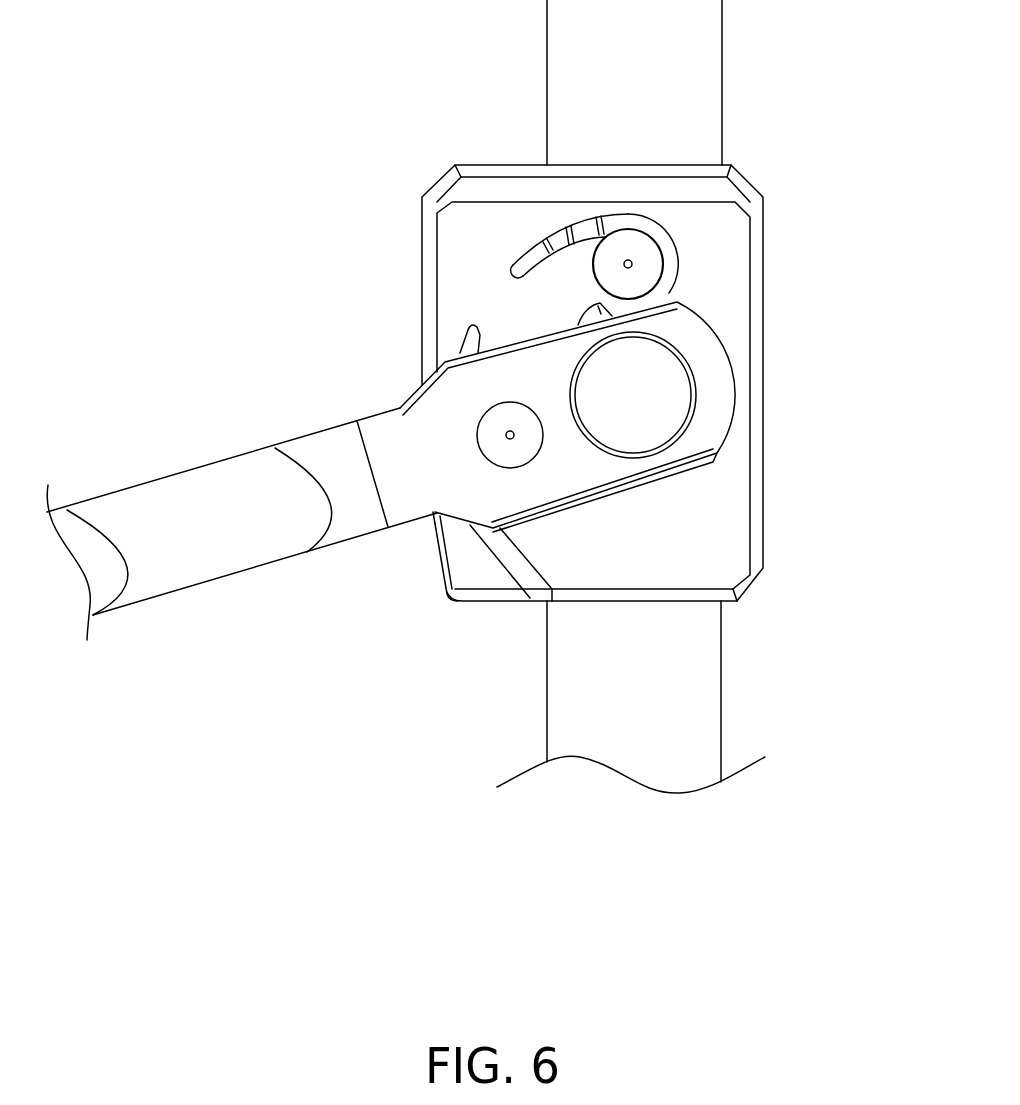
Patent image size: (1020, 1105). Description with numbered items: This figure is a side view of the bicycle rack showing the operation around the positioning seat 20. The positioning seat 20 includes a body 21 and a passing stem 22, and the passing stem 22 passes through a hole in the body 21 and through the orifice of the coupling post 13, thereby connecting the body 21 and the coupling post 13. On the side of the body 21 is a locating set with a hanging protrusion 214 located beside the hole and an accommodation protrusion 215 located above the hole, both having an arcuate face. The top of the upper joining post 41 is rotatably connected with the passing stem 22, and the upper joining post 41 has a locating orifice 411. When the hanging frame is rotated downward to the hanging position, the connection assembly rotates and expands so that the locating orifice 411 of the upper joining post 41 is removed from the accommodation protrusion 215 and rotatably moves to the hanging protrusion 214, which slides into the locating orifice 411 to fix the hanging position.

The coupling post 13 is at (582, 44).
The positioning seat 20 is at (785, 198).
The body 21 is at (757, 348).
The passing stem 22 is at (695, 408).
The hanging protrusion 214 is at (508, 413).
The accommodation protrusion 215 is at (650, 263).
The upper joining post 41 is at (440, 395).
The locating orifice 411 is at (522, 464).